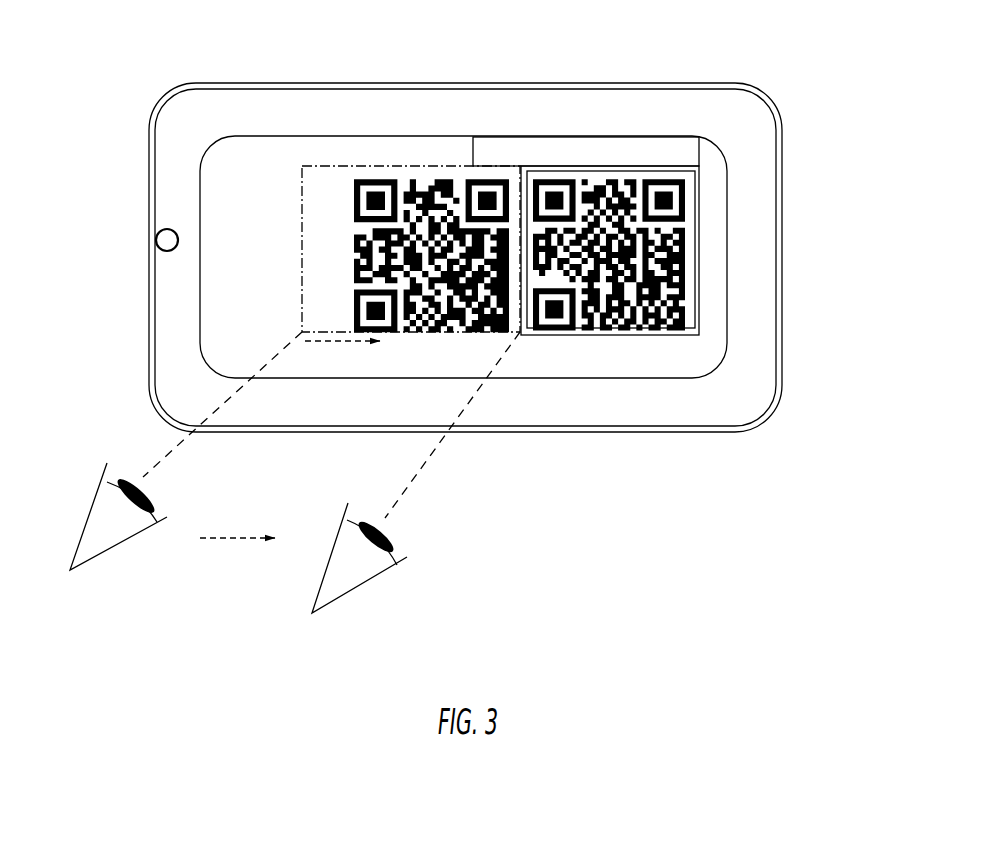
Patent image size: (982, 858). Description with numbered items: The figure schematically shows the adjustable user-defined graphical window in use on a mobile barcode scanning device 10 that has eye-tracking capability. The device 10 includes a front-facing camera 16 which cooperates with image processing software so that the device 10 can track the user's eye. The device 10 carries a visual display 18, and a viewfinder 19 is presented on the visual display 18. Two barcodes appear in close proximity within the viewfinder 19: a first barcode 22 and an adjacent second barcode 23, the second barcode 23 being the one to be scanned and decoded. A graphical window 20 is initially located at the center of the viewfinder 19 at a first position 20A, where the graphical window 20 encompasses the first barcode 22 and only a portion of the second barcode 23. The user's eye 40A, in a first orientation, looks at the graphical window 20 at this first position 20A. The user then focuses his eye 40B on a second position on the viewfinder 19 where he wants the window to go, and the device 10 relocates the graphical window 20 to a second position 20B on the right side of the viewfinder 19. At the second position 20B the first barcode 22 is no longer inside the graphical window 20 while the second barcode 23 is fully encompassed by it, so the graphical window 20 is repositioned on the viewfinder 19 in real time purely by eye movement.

The mobile barcode scanning device 10 is at (120, 86).
The front-facing camera 16 is at (153, 242).
The visual display 18 is at (242, 289).
The viewfinder 19 is at (288, 223).
The graphical window 20 is at (477, 278).
The first position 20A is at (365, 254).
The second position 20B is at (689, 183).
The first barcode 22 is at (430, 181).
The second barcode 23 is at (624, 181).
The user's eye in a first orientation 40A is at (124, 553).
The user's eye in a second orientation 40B is at (366, 594).